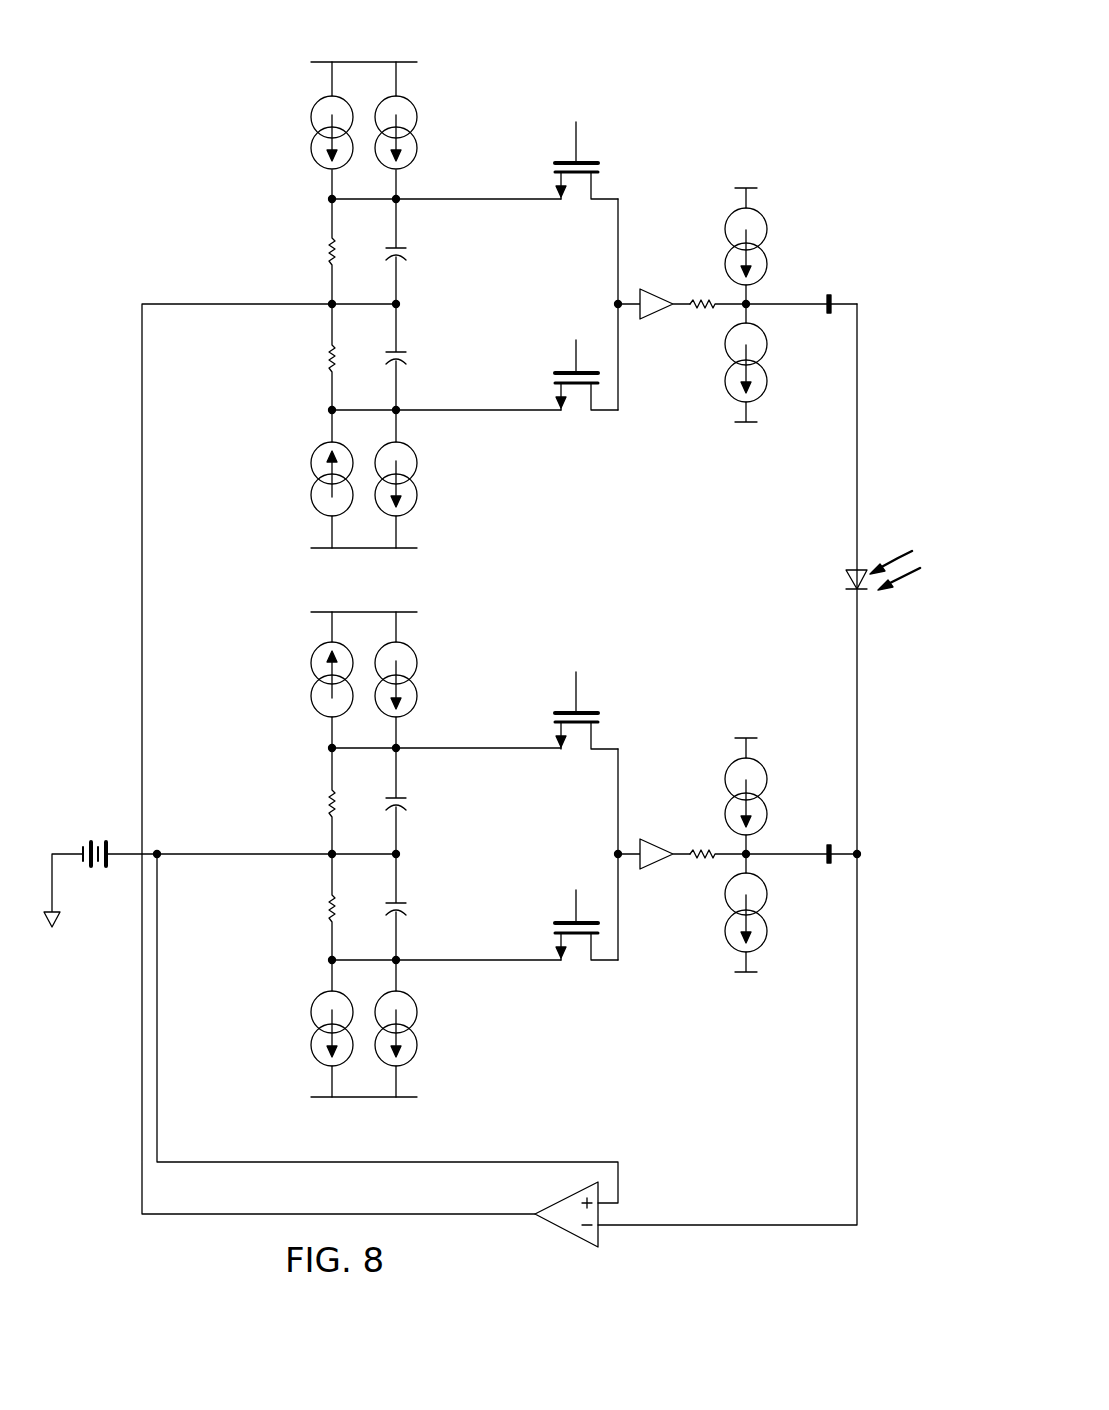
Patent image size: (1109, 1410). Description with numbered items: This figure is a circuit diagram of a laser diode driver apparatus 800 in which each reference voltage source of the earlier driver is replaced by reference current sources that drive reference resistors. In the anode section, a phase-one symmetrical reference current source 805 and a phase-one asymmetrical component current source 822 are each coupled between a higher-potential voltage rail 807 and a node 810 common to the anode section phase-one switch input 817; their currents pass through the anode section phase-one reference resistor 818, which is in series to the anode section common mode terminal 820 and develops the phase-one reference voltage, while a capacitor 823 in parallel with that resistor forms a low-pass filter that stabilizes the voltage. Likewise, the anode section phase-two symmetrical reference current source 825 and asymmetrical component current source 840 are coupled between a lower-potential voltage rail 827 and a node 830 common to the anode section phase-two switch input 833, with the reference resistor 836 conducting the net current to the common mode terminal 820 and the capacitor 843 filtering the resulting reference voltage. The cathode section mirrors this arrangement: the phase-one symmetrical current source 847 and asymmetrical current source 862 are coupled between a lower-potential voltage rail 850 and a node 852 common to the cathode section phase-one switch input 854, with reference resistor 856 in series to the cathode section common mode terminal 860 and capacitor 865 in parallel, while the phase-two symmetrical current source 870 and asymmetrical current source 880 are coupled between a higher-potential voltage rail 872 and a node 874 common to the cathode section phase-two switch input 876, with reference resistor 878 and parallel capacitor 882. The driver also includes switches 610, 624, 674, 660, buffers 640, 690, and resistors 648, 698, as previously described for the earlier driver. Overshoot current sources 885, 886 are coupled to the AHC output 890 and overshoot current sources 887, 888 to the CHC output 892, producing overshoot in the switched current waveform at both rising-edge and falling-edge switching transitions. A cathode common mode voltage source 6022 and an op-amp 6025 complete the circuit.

The laser diode driver apparatus 800 is at (808, 62).
The higher-potential voltage rail 807 is at (363, 62).
The anode section Φ1 asymmetrical component current source IS(AΦ1ASYM) 822 is at (313, 106).
The anode section Φ1 symmetrical reference current source IS(AΦ1S) 805 is at (415, 106).
The node common to the anode section Φ1 switch input 810 is at (400, 198).
The anode section Φ1 reference resistor R(AΦ1) 818 is at (328, 245).
The capacitor C(AΦ1) 823 is at (405, 245).
The anode section common mode terminal 820 is at (328, 304).
The capacitor C(AΦ2) 843 is at (405, 355).
The anode section Φ2 reference resistor R(AΦ2) 836 is at (328, 362).
The node common to the anode section Φ2 switch input 830 is at (400, 410).
The anode section Φ2 asymmetrical component current source IS(AΦ2ASYM) 840 is at (313, 507).
The anode section Φ2 symmetrical reference current source IS(AΦ2S) 825 is at (415, 507).
The lower-potential voltage rail 827 is at (345, 550).
The higher-potential voltage rail 872 is at (383, 612).
The cathode section Φ2 asymmetrical component current source IS(CΦ2ASYM) 880 is at (313, 658).
The cathode section Φ2 symmetrical reference current source IS(CΦ2S) 870 is at (415, 658).
The node common to the cathode section Φ2 switch input 874 is at (400, 748).
The cathode section Φ2 reference resistor R(CΦ2) 878 is at (328, 795).
The capacitor C(CΦ2) 882 is at (405, 793).
The cathode section common mode terminal 860 is at (328, 854).
The capacitor C(CΦ1) 865 is at (405, 903).
The cathode section Φ1 reference resistor R(CΦ1) 856 is at (328, 912).
The node common to the cathode section Φ1 switch input 852 is at (400, 960).
The cathode section Φ1 asymmetrical component current source IS(CΦ1ASYM) 862 is at (313, 1059).
The cathode section Φ1 symmetrical reference current source IS(CΦ1S) 847 is at (415, 1059).
The lower-potential voltage rail 850 is at (363, 1098).
The anode section Φ1 switch input 817 is at (515, 198).
The switch 610 is at (630, 154).
The switch 624 is at (579, 292).
The anode section Φ2 switch input 833 is at (530, 412).
The buffer 640 is at (662, 292).
The resistor 648 is at (702, 315).
The overshoot current source 885 is at (768, 230).
The overshoot current source 886 is at (768, 385).
The AHC output 890 is at (795, 308).
The cathode section Φ2 switch input 876 is at (515, 748).
The switch 674 is at (630, 704).
The switch 660 is at (579, 842).
The cathode section Φ1 switch input 854 is at (530, 962).
The buffer 690 is at (662, 842).
The resistor 698 is at (702, 865).
The overshoot current source 887 is at (768, 780).
The overshoot current source 888 is at (768, 935).
The CHC output 892 is at (795, 858).
The cathode common mode voltage source 6022 is at (102, 890).
The op-amp 6025 is at (558, 1242).